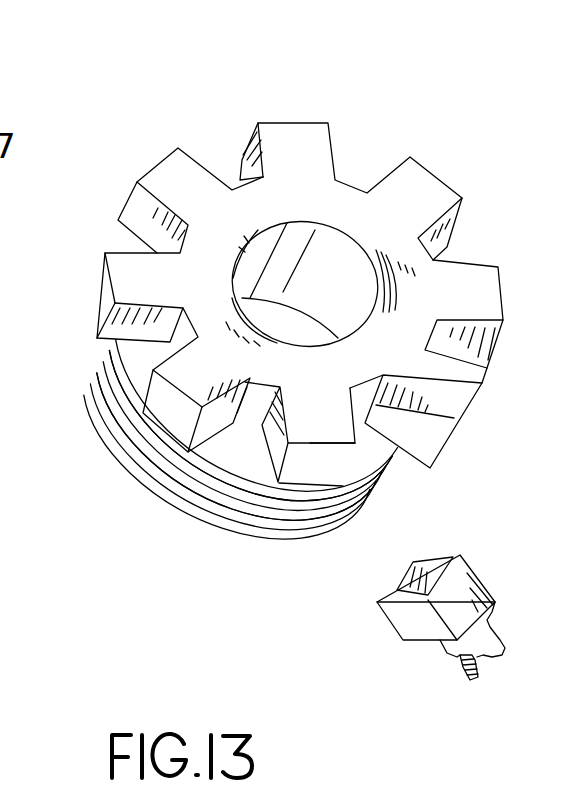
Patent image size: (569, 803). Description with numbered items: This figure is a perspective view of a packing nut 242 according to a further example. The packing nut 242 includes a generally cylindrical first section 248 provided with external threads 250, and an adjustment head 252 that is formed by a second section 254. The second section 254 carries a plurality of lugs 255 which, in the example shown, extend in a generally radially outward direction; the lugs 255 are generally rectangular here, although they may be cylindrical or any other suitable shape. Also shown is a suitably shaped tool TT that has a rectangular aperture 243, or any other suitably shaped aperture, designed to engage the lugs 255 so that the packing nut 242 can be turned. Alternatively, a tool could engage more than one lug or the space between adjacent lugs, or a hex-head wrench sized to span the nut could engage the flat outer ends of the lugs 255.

The lugs 255 is at (287, 145).
The second section 254 is at (281, 323).
The packing nut 242 is at (172, 465).
The first section 248 is at (198, 492).
The external threads 250 is at (288, 510).
The adjustment head 252 is at (329, 422).
The rectangular aperture 243 is at (406, 585).
The tool TT is at (445, 652).